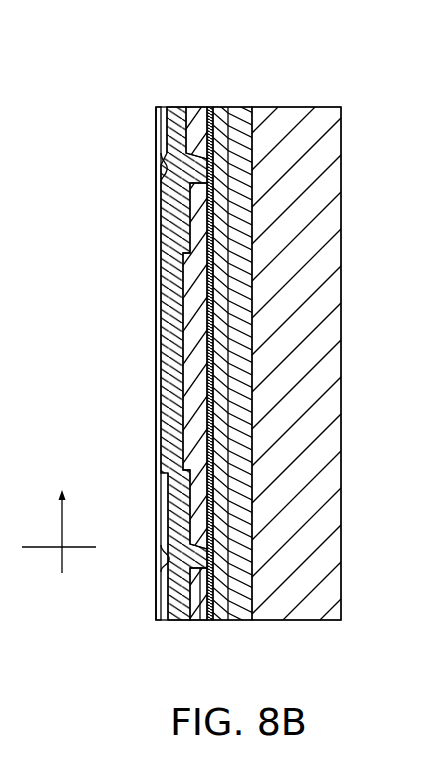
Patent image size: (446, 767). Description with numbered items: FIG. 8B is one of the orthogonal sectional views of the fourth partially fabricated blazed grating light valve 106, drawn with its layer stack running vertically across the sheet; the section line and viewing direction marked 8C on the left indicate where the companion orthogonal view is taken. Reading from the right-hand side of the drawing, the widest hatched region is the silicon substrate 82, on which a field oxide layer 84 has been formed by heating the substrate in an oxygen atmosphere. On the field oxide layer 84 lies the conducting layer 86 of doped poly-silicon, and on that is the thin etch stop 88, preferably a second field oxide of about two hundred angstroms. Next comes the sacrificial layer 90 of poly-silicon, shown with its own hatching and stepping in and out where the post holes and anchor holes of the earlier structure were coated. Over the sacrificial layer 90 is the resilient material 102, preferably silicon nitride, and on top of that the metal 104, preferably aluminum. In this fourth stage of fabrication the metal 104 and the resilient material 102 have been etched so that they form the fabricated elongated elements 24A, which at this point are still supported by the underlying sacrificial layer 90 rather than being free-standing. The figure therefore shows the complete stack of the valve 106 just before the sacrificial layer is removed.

The fourth partially fabricated blazed grating light valve 106 is at (122, 84).
The metal 104 is at (165, 107).
The resilient material 102 is at (177, 620).
The sacrificial layer 90 is at (197, 107).
The conducting layer 86 is at (218, 107).
The etch stop 88 is at (212, 620).
The field oxide layer 84 is at (246, 620).
The silicon substrate 82 is at (290, 107).
The fabricated elongated elements 24A is at (158, 405).
The section view indicator 8C is at (61, 542).